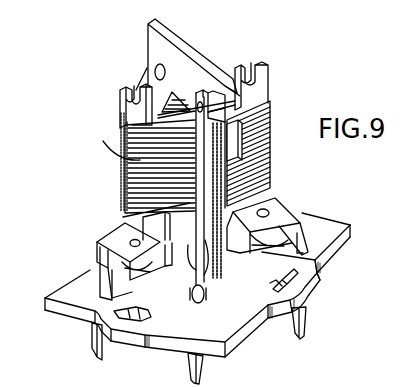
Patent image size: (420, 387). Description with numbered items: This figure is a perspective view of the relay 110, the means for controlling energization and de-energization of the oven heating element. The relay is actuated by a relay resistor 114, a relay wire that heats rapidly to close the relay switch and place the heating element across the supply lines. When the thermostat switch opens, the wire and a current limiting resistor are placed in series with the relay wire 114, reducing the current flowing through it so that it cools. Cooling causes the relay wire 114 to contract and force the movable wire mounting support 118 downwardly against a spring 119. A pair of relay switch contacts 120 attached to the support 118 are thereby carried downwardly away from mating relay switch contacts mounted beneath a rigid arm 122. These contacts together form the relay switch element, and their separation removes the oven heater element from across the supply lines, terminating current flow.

The relay 110 is at (282, 88).
The relay resistor 114 is at (124, 133).
The movable wire mounting support 118 is at (262, 94).
The spring 119 is at (178, 280).
The relay switch contacts 120 is at (142, 275).
The rigid arm 122 is at (115, 243).